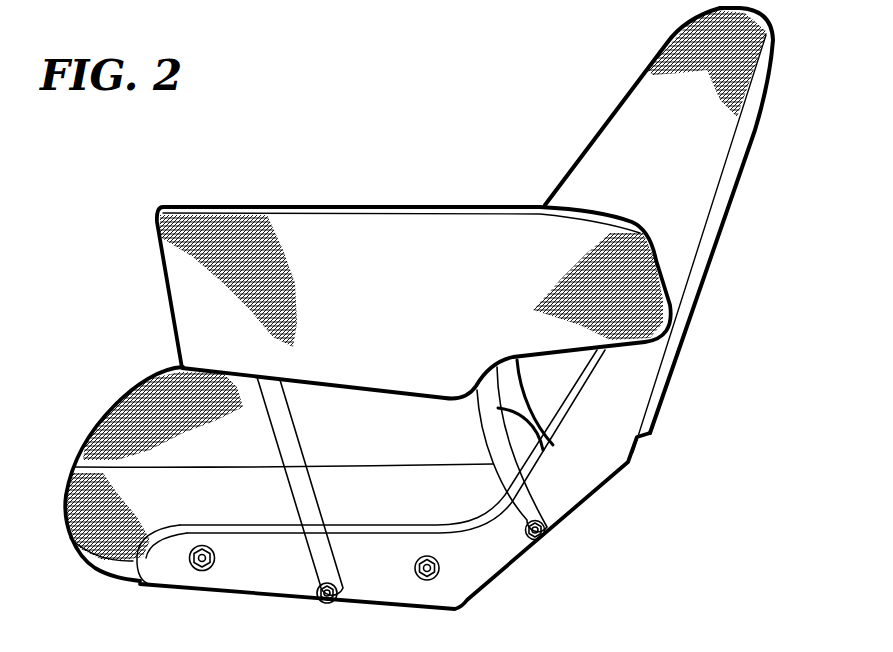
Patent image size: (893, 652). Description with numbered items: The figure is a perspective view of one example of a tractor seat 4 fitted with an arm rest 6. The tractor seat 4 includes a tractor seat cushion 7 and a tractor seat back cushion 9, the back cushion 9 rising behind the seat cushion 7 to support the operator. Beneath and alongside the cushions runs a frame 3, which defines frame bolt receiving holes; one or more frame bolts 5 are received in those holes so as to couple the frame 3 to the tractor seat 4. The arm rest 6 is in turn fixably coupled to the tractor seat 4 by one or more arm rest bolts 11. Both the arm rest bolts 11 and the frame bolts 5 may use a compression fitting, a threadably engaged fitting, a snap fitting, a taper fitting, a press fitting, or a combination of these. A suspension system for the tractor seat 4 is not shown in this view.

The frame 3 is at (595, 470).
The tractor seat 4 is at (365, 150).
The frame bolts 5 is at (197, 568).
The arm rest 6 is at (253, 233).
The tractor seat cushion 7 is at (118, 425).
The tractor seat back cushion 9 is at (605, 127).
The arm rest bolts 11 is at (545, 540).